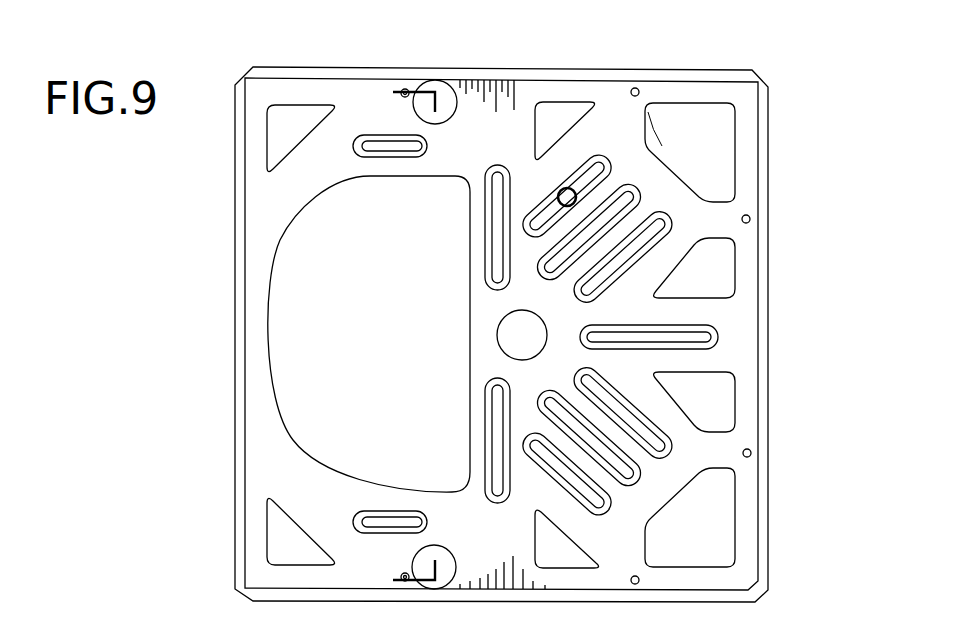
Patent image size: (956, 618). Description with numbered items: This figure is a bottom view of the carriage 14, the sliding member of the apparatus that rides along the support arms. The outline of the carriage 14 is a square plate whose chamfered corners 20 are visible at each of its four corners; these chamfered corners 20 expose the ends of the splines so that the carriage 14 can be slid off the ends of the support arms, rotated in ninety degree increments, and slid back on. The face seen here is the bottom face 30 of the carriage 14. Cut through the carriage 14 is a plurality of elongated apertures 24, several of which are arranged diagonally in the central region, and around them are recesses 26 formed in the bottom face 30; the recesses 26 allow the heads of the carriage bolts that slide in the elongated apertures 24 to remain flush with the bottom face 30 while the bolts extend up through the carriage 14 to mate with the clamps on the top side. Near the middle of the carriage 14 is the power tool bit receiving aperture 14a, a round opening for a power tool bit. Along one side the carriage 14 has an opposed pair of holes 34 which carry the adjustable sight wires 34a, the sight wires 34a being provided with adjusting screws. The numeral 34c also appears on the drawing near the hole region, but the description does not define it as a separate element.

The carriage 14 is at (746, 216).
The power tool bit receiving aperture 14a is at (497, 330).
The chamfered corners 20 is at (567, 197).
The elongated apertures 24 is at (703, 338).
The recesses 26 is at (695, 327).
The bottom face 30 is at (510, 131).
The holes 34 is at (447, 103).
The adjustable sight wires 34a is at (436, 124).
The fastener rivet 34c is at (397, 92).